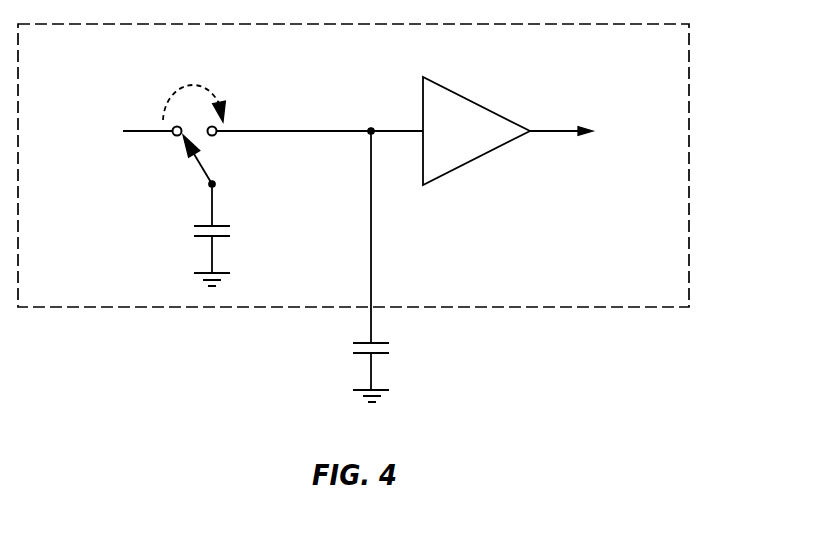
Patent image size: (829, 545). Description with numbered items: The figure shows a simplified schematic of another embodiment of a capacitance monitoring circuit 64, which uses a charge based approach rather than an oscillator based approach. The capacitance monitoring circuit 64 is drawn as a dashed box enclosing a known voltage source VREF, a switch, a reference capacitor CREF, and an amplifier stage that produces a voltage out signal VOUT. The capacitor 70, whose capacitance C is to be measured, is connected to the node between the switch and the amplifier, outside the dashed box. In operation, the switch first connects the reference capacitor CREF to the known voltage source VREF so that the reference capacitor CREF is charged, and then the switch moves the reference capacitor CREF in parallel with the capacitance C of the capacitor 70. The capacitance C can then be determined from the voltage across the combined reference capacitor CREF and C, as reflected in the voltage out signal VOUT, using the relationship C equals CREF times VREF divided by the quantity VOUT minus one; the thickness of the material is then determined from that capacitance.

The capacitance monitoring circuit 64 is at (688, 90).
The capacitor 70 is at (400, 375).
The known voltage source VREF is at (112, 128).
The reference capacitor CREF is at (180, 235).
The voltage out signal VOUT is at (594, 125).